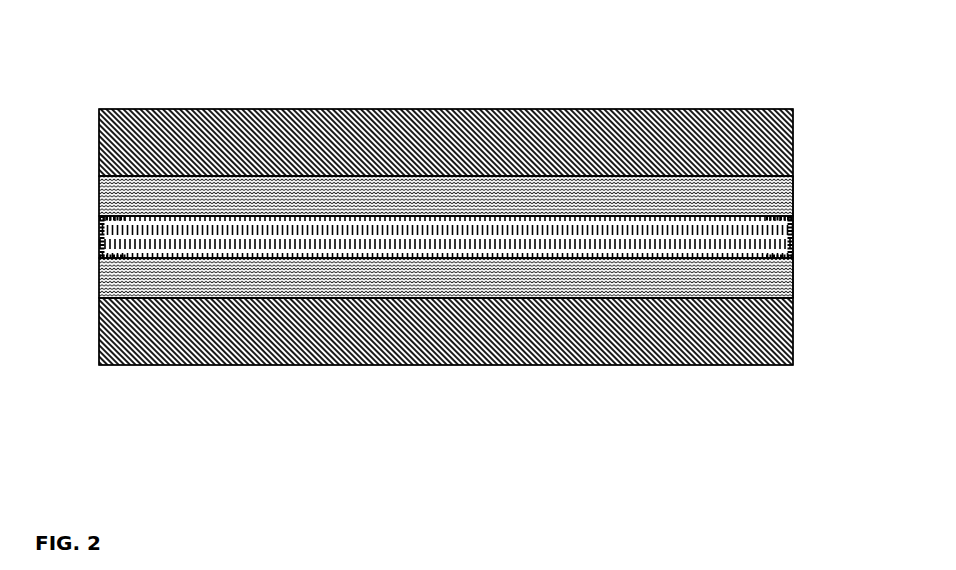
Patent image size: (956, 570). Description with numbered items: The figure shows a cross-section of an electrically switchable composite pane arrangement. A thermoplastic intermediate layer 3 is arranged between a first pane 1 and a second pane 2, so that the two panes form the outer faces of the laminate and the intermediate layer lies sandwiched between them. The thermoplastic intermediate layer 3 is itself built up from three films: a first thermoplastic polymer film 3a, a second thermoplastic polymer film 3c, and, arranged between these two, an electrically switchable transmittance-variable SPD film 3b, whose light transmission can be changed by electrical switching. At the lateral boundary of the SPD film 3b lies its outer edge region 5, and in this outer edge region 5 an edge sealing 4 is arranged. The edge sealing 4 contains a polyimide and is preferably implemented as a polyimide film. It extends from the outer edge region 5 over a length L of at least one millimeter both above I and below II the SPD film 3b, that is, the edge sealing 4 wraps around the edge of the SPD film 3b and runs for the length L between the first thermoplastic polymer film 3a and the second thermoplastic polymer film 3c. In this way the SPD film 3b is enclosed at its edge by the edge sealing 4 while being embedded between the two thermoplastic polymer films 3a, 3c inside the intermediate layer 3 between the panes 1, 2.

The first pane 1 is at (212, 97).
The second pane 2 is at (238, 372).
The thermoplastic intermediate layer 3 is at (450, 219).
The first thermoplastic polymer film 3a is at (97, 286).
The electrically switchable transmittance-variable SPD film 3b is at (183, 244).
The second thermoplastic polymer film 3c is at (118, 203).
The edge sealing 4 is at (97, 244).
The outer edge region 5 is at (783, 227).
The above I is at (523, 259).
The below II is at (530, 213).
The length L is at (784, 268).